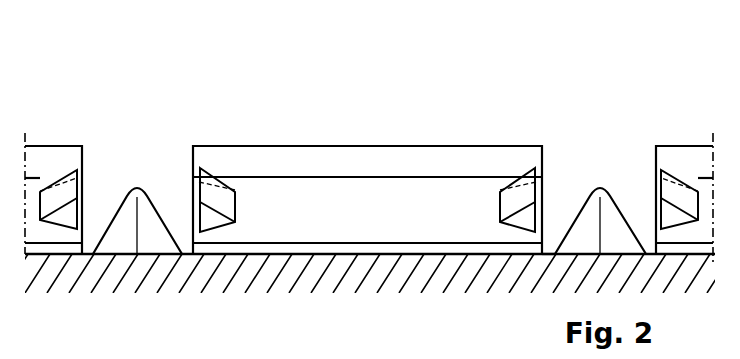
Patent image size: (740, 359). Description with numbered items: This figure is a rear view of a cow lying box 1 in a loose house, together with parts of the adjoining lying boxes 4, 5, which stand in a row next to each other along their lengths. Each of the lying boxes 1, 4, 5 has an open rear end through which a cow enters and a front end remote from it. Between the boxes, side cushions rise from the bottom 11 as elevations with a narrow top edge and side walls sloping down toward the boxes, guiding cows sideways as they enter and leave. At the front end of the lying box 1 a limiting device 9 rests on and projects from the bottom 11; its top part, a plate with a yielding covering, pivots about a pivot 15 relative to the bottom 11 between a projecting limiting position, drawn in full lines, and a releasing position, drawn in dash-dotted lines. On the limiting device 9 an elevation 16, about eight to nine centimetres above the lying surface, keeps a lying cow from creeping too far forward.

The lying box 1 is at (196, 73).
The adjoining lying box 4 is at (79, 73).
The adjoining lying box 5 is at (658, 73).
The limiting device 9 is at (288, 136).
The bottom 11 is at (549, 254).
The pivot 15 is at (440, 254).
The elevation 16 is at (367, 157).